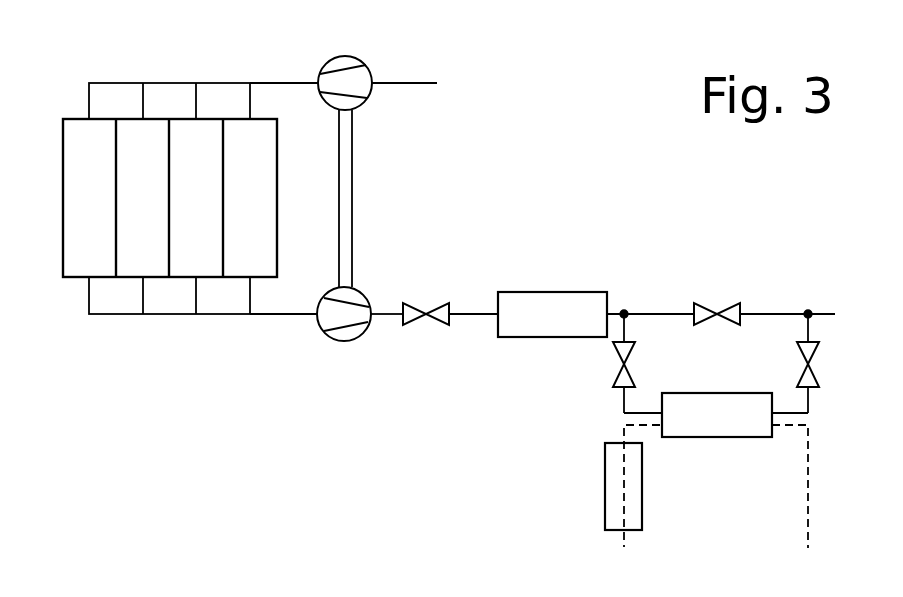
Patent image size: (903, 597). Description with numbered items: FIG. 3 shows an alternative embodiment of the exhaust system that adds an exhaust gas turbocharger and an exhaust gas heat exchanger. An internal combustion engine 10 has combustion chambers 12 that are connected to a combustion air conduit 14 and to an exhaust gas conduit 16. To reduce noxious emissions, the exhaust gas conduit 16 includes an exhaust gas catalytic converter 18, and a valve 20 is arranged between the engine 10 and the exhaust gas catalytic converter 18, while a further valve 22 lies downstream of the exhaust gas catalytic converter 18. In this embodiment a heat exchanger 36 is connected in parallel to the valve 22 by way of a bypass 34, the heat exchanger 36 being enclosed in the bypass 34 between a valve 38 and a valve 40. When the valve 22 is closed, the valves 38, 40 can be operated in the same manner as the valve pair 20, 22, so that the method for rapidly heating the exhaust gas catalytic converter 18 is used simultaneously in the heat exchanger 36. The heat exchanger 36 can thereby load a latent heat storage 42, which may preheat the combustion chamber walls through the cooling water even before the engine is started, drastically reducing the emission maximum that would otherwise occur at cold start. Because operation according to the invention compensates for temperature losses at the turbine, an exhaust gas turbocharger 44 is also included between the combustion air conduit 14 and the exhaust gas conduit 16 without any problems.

The internal combustion engine 10 is at (266, 183).
The combustion chambers 12 is at (80, 167).
The combustion air conduit 14 is at (177, 83).
The exhaust gas conduit 16 is at (273, 314).
The exhaust gas catalytic converter 18 is at (553, 292).
The valve 20 is at (426, 314).
The further valve 22 is at (717, 314).
The bypass 34 is at (622, 413).
The heat exchanger 36 is at (722, 393).
The valve 38 is at (620, 360).
The valve 40 is at (814, 365).
The latent heat storage 42 is at (605, 488).
The exhaust gas turbocharger 44 is at (353, 172).